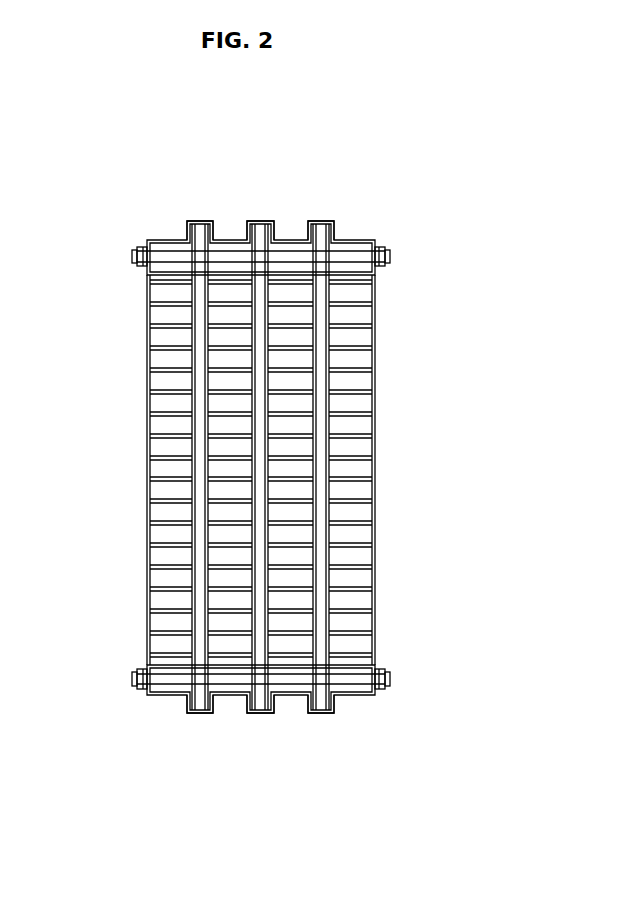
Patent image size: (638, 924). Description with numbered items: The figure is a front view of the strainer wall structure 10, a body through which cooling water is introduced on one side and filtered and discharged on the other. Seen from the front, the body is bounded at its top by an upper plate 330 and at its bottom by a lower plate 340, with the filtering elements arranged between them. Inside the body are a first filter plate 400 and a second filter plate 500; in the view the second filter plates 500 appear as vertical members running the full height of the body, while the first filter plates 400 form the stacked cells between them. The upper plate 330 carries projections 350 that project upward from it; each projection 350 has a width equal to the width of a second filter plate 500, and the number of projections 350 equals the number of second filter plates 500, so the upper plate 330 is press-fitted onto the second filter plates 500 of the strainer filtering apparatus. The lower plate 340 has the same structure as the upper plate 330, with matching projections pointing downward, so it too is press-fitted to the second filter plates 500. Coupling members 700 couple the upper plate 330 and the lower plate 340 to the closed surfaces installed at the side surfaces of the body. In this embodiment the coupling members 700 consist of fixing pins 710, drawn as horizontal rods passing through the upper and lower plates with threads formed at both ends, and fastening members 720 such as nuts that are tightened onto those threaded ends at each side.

The strainer wall structure 10 is at (346, 182).
The upper plate 330 is at (232, 228).
The lower plate 340 is at (230, 697).
The projections 350 is at (259, 226).
The first filter plate 400 is at (163, 292).
The second filter plate 500 is at (200, 313).
The coupling members 700 is at (474, 240).
The fixing pins 710 is at (330, 258).
The fastening members 720 is at (377, 246).